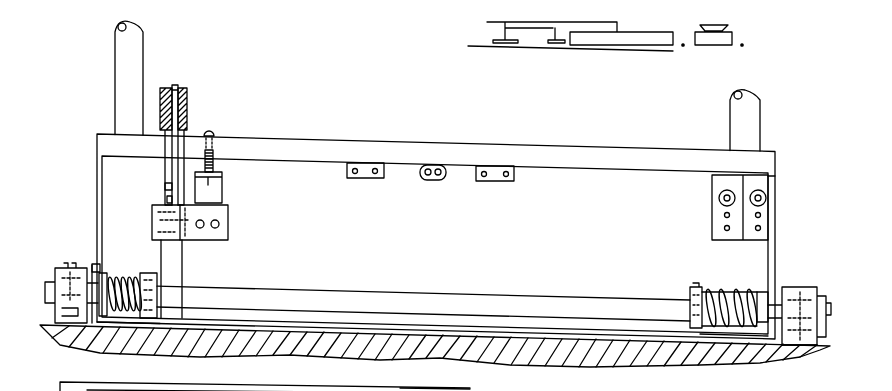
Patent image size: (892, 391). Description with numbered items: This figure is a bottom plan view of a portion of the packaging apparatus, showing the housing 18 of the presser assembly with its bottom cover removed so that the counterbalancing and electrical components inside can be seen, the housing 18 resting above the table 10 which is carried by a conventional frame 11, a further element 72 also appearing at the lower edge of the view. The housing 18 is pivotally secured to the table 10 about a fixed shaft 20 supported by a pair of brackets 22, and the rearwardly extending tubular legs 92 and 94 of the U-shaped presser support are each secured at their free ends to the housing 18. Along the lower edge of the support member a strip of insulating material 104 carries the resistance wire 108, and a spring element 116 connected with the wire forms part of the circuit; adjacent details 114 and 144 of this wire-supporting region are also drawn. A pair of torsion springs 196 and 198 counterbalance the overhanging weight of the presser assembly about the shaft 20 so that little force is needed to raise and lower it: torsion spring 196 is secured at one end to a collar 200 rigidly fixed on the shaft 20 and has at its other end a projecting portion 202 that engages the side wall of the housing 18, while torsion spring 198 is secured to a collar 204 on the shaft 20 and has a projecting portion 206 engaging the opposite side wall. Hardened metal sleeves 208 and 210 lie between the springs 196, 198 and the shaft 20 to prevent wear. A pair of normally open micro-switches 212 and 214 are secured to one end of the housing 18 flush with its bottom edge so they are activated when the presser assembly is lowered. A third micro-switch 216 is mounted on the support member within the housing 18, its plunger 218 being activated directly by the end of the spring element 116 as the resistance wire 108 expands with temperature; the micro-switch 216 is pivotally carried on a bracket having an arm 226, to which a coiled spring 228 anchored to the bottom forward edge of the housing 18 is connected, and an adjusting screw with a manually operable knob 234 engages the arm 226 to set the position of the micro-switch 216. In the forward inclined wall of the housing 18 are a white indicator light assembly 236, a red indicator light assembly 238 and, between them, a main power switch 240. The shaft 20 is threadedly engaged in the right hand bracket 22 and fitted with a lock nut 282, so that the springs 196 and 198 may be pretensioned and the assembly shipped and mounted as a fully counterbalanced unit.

The table 10 is at (342, 340).
The frame 11 is at (438, 390).
The housing 18 is at (540, 145).
The fixed shaft 20 is at (406, 292).
The brackets 22 is at (65, 268).
The lower frame member 72 is at (150, 390).
The leg 92 is at (138, 35).
The leg 94 is at (755, 103).
The strip of insulating material 104 is at (182, 90).
The resistance wire 108 is at (173, 84).
The stop 114 is at (164, 186).
The spring element 116 is at (165, 199).
The sleeve strip 144 is at (186, 102).
The torsion spring 196 is at (114, 276).
The torsion spring 198 is at (726, 290).
The collar 200 is at (165, 290).
The projecting portion 202 is at (96, 263).
The collar 204 is at (688, 297).
The projecting portion 206 is at (772, 292).
The hardened metal sleeve 208 is at (110, 318).
The hardened metal sleeve 210 is at (753, 340).
The micro-switch 212 is at (712, 190).
The micro-switch 214 is at (765, 185).
The micro-switch 216 is at (228, 231).
The plunger 218 is at (160, 202).
The arm 226 is at (212, 196).
The coiled spring 228 is at (215, 157).
The knob 234 is at (212, 128).
The white indicator light assembly 236 is at (366, 165).
The red indicator light assembly 238 is at (496, 166).
The main power switch 240 is at (436, 165).
The lock nut 282 is at (819, 346).